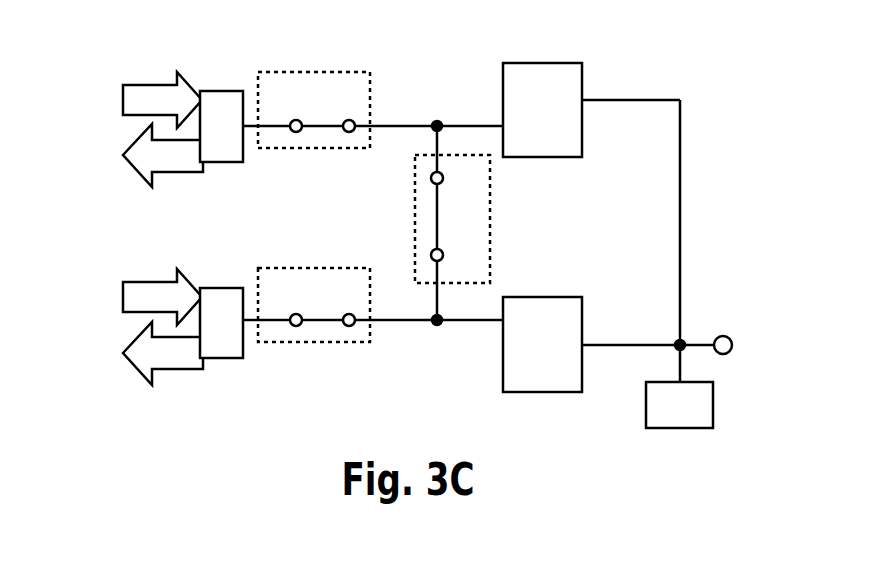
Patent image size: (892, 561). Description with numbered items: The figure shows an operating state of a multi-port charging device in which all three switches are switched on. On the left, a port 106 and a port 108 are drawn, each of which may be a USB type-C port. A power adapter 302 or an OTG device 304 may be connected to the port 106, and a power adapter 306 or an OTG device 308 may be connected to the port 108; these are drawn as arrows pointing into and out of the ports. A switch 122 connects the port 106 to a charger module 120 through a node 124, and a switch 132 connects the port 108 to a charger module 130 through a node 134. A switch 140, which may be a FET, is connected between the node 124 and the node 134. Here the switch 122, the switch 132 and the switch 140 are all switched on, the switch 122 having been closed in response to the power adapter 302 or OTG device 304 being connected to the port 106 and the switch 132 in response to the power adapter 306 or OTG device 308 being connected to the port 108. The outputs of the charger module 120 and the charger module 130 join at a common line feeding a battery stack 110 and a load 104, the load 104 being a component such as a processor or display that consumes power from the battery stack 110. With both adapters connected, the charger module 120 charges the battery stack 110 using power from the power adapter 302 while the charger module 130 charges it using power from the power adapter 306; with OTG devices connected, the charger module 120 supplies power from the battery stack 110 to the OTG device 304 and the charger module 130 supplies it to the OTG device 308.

The load 104 is at (723, 329).
The port 106 is at (214, 90).
The port 108 is at (220, 287).
The battery stack 110 is at (660, 417).
The charger module 120 is at (522, 122).
The switch 122 is at (318, 72).
The node 124 is at (440, 115).
The charger module 130 is at (522, 357).
The switch 132 is at (320, 267).
The node 134 is at (438, 334).
The switch 140 is at (413, 223).
The power adapter 302 is at (143, 112).
The OTG device 304 is at (143, 167).
The power adapter 306 is at (143, 309).
The OTG device 308 is at (143, 365).